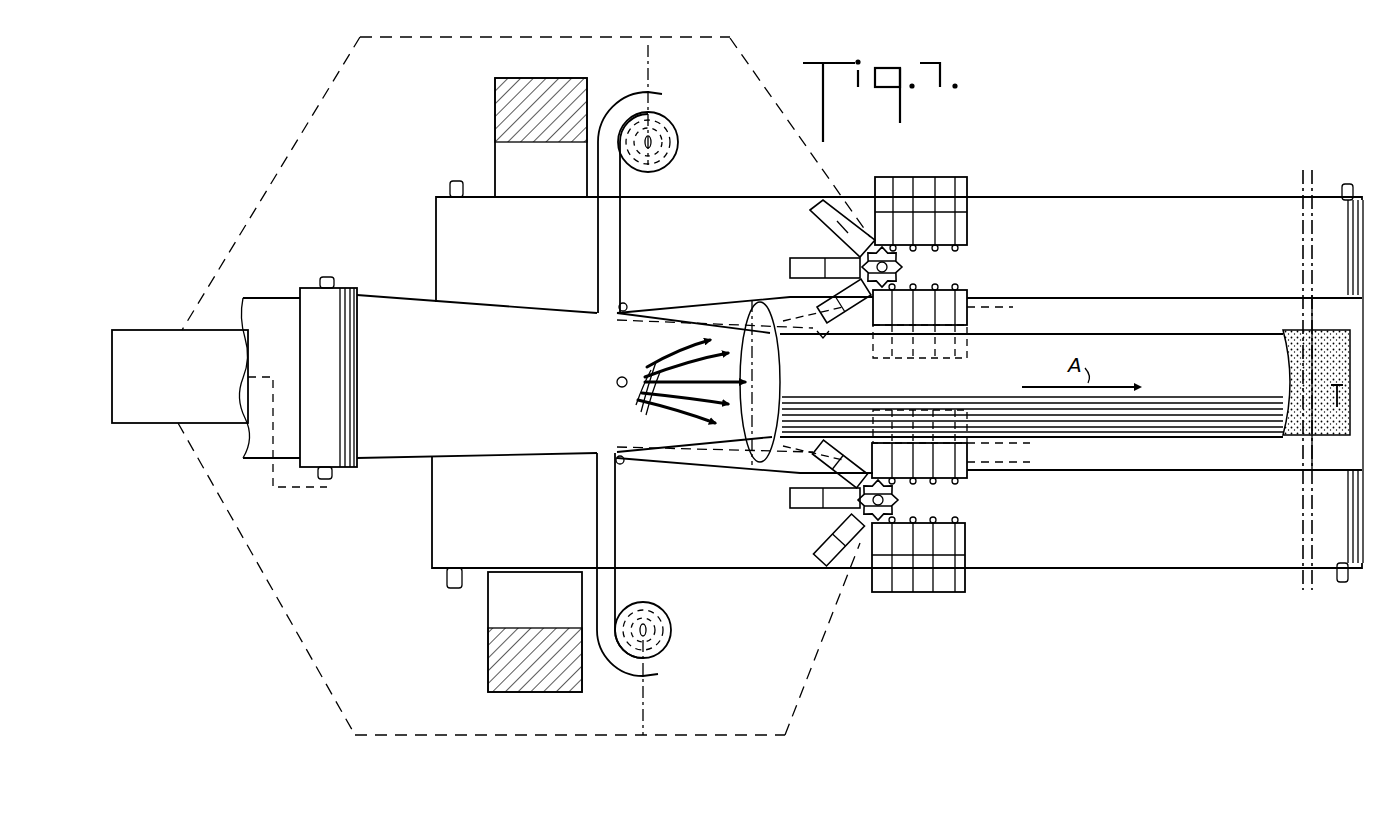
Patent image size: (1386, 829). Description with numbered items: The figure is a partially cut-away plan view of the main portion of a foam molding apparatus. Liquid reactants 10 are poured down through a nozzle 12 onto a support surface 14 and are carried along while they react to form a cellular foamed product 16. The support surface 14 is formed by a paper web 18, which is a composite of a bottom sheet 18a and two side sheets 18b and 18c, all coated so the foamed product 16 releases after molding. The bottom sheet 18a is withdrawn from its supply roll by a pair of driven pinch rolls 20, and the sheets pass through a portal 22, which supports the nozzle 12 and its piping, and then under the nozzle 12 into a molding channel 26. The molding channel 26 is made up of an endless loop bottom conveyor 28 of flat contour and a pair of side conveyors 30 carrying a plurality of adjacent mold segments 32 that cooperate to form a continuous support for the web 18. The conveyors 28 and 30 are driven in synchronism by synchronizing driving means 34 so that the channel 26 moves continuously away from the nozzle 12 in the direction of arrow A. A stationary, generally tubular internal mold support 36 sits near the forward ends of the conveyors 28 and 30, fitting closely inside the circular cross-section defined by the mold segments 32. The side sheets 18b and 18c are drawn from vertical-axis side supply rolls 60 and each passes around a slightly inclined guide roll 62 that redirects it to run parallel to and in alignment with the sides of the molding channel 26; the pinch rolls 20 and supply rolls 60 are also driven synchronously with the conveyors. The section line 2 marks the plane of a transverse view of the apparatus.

The section line 2 is at (1323, 380).
The liquid reactants 10 is at (662, 405).
The nozzle 12 is at (617, 379).
The support surface 14 is at (632, 358).
The cellular foamed product 16 is at (1329, 337).
The paper web 18 is at (707, 470).
The bottom sheet 18a is at (275, 302).
The side sheet 18b is at (603, 262).
The side sheet 18c is at (735, 463).
The driven pinch rolls 20 is at (340, 468).
The portal 22 is at (587, 118).
The molding channel 26 is at (866, 377).
The bottom conveyor 28 is at (440, 242).
The side conveyors 30 is at (985, 176).
The mold segments 32 is at (940, 176).
The synchronizing driving means 34 is at (232, 322).
The internal mold support 36 is at (768, 437).
The side supply rolls 60 is at (668, 160).
The guide roll 62 is at (627, 304).